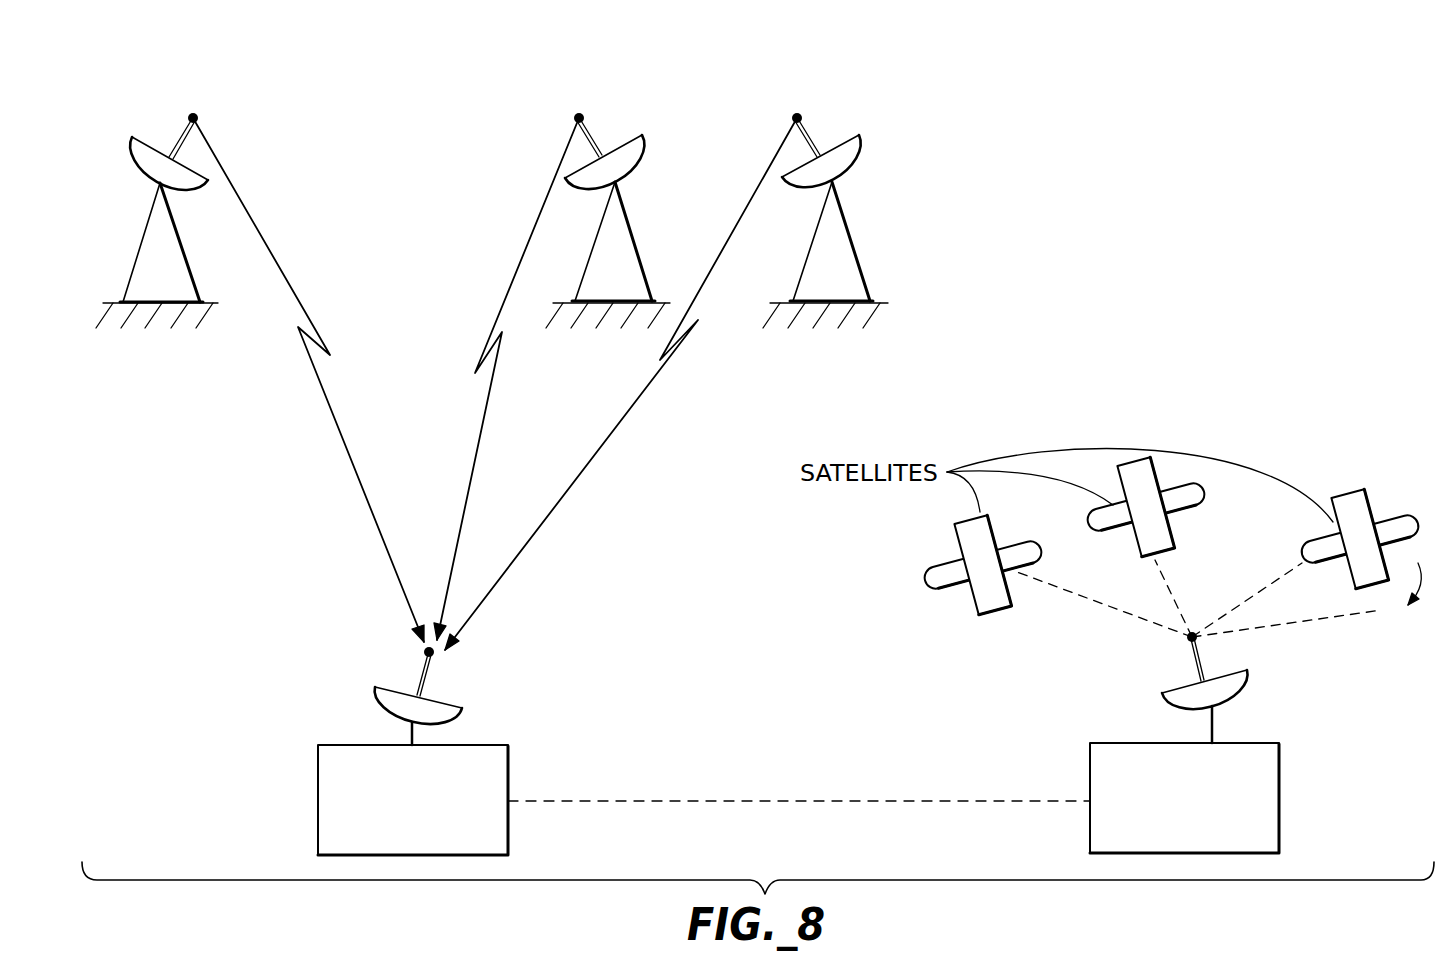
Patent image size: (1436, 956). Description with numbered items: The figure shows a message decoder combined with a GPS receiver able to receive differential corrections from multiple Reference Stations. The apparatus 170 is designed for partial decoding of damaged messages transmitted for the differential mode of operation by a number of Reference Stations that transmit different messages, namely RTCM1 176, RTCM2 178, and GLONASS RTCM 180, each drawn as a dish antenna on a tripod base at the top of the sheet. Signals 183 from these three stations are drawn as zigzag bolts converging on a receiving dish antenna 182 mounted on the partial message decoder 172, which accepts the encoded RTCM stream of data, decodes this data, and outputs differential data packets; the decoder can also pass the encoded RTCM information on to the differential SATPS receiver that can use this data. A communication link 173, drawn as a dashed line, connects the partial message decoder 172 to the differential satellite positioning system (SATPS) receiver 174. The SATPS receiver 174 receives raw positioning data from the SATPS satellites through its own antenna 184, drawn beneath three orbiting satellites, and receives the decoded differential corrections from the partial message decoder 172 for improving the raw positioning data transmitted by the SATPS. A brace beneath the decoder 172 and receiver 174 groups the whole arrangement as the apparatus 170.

The apparatus 170 is at (638, 825).
The partial message decoder 172 is at (318, 780).
The communication link 173 is at (819, 802).
The differential satellite positioning system (SATPS) receiver 174 is at (1279, 783).
The RTCM1 Reference Station 176 is at (178, 133).
The RTCM2 Reference Station 178 is at (597, 132).
The GLONASS RTCM Reference Station 180 is at (813, 133).
The decoder receiving antenna 182 is at (412, 677).
The transmitted differential correction signals 183 is at (604, 443).
The SATPS receiver antenna 184 is at (1195, 673).